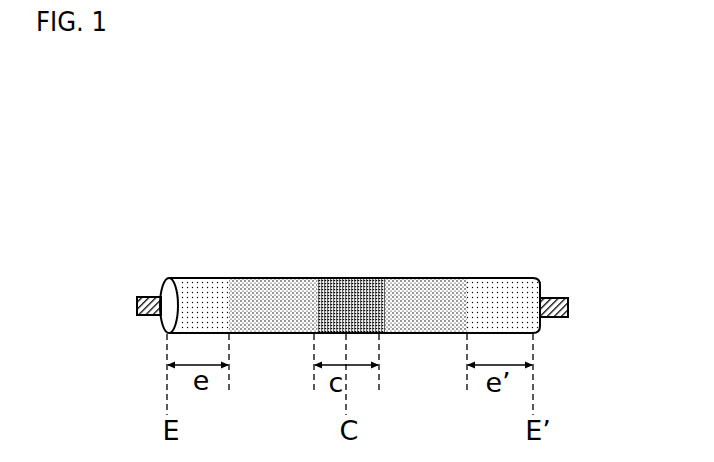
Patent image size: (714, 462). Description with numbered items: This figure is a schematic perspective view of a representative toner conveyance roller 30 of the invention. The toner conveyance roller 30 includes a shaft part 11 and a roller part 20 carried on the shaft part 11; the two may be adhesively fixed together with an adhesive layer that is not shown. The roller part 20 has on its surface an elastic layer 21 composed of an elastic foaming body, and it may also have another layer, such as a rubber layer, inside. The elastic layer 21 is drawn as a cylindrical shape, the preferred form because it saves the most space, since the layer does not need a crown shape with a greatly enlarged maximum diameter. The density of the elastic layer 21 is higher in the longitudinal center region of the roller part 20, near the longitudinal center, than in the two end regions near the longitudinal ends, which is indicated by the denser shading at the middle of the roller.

The toner conveyance roller 30 is at (633, 173).
The roller part 20 is at (403, 257).
The elastic layer 21 is at (187, 285).
The shaft part 11 is at (137, 305).